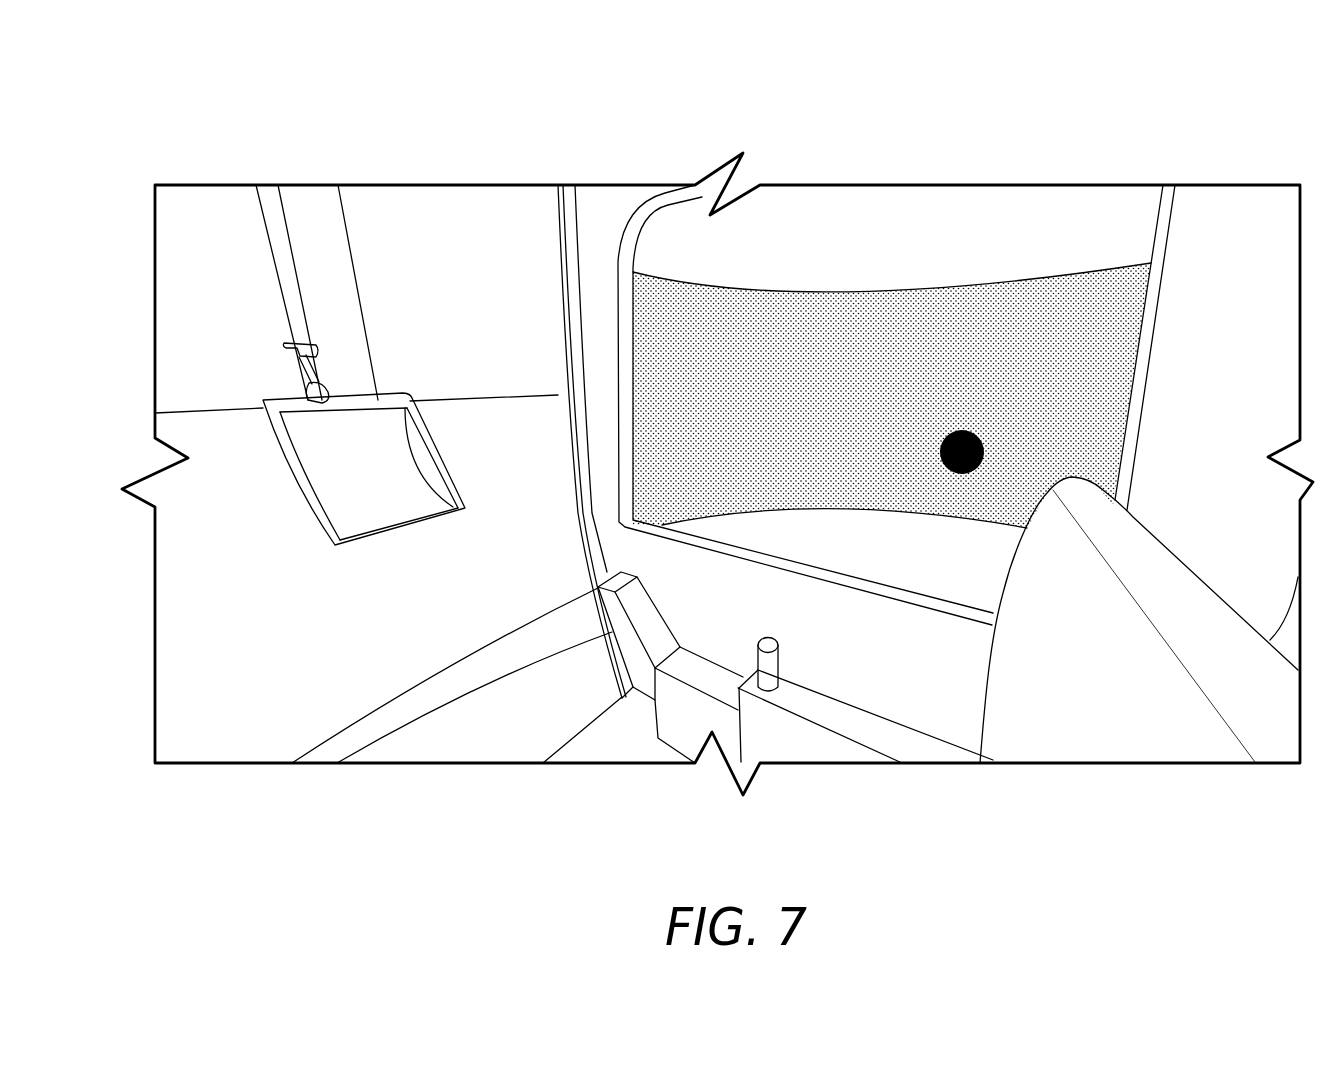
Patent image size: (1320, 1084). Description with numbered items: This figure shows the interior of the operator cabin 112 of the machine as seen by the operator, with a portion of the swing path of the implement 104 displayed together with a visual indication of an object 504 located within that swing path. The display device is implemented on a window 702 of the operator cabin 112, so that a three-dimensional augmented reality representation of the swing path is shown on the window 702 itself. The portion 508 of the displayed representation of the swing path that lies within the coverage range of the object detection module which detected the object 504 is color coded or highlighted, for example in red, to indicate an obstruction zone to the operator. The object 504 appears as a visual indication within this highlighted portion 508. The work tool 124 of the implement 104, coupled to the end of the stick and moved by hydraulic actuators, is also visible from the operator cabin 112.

The implement 104 is at (255, 299).
The operator cabin 112 is at (1100, 100).
The work tool 124 is at (390, 391).
The object 504 is at (950, 433).
The portion of the displayed visual representation of the swing path 508 is at (967, 287).
The window 702 is at (1152, 205).